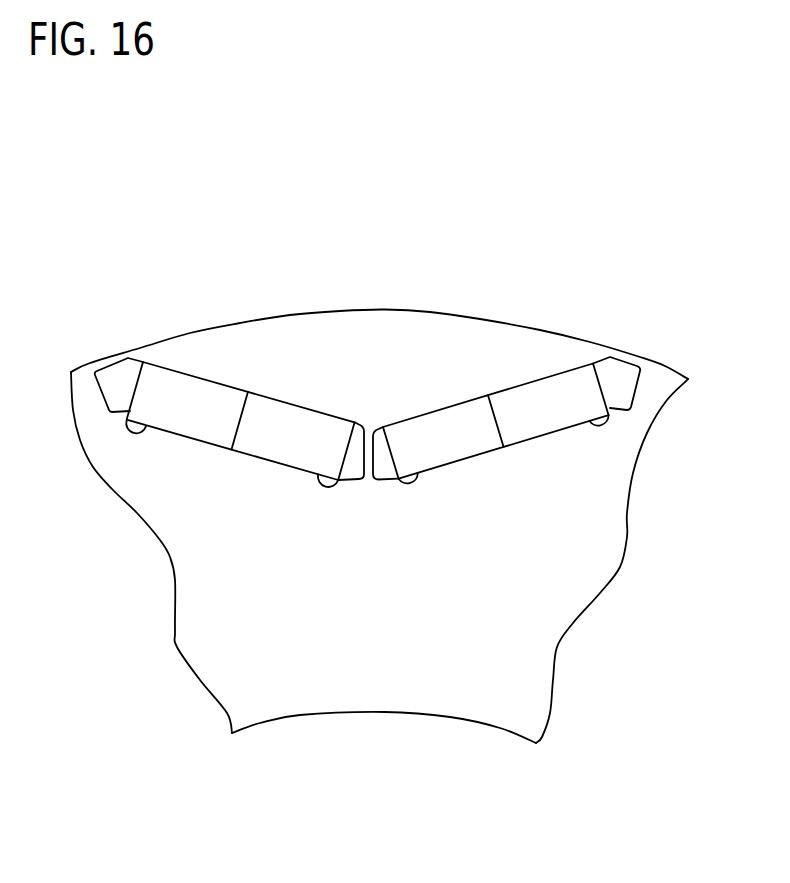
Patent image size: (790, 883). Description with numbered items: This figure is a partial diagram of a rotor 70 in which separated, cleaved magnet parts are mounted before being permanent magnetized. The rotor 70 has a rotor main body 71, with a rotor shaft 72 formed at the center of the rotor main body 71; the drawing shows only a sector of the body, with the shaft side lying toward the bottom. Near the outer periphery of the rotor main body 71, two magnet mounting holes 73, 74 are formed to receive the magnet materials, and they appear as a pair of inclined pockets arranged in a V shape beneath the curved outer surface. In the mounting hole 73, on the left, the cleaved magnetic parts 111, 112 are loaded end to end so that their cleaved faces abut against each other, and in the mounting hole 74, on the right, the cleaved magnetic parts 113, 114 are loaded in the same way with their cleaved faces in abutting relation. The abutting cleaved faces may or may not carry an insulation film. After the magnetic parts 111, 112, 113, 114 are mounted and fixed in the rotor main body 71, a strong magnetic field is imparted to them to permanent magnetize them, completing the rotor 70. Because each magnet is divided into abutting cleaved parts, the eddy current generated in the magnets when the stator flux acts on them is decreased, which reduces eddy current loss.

The rotor 70 is at (379, 486).
The rotor main body 71 is at (433, 337).
The rotor shaft 72 is at (377, 761).
The magnet mounting hole 73 is at (125, 360).
The magnet mounting hole 74 is at (637, 365).
The cleaved magnetic part 111 is at (187, 398).
The cleaved magnetic part 112 is at (278, 423).
The cleaved magnetic part 113 is at (449, 423).
The cleaved magnetic part 114 is at (557, 393).